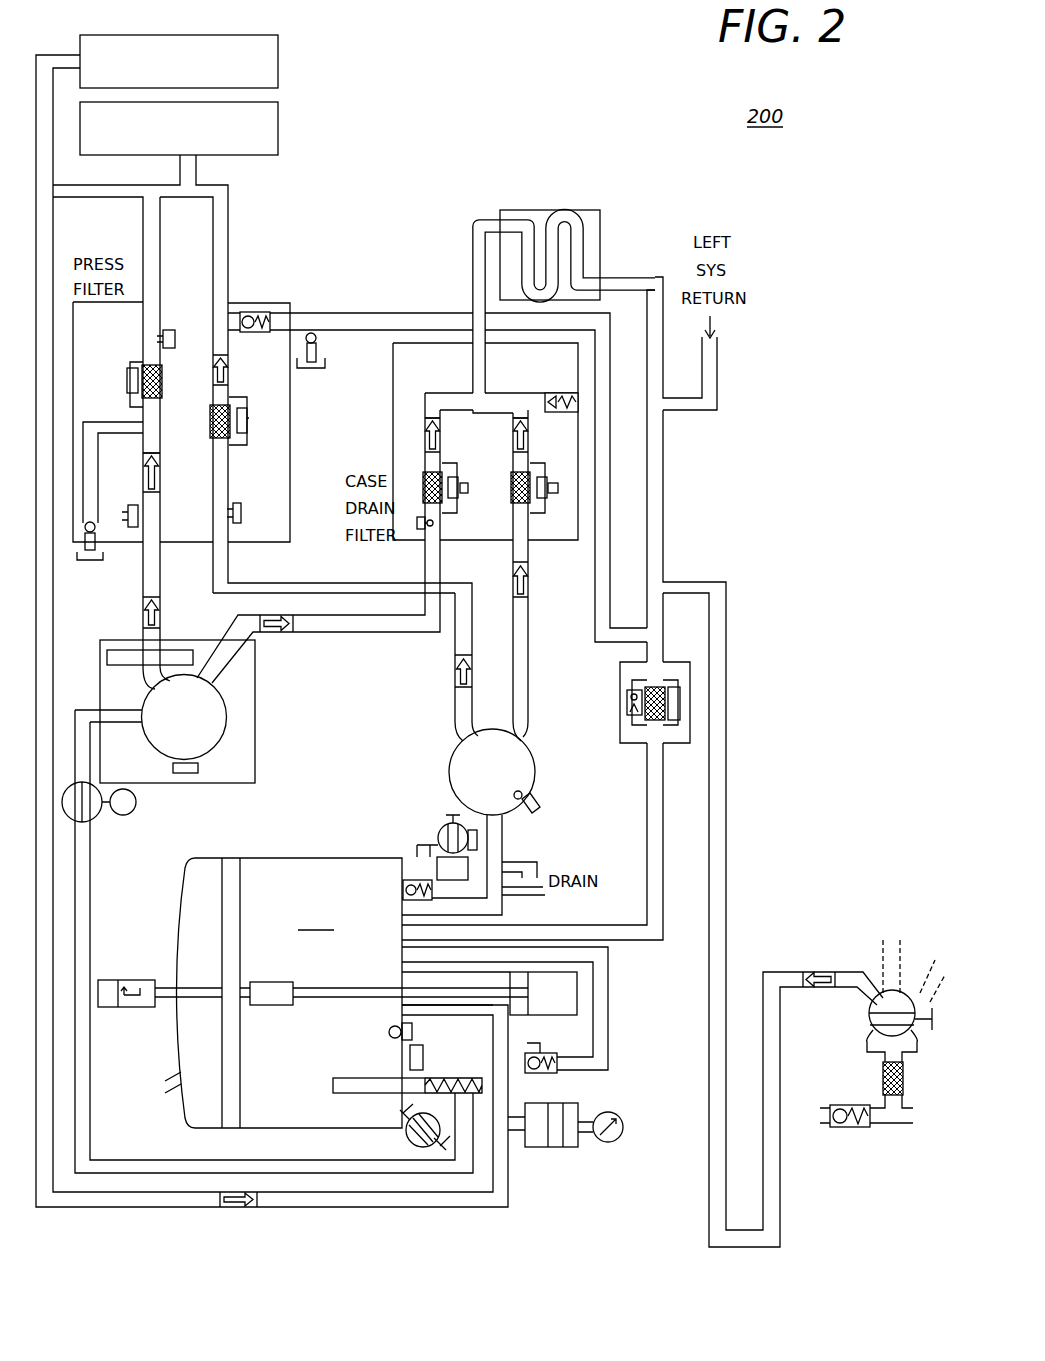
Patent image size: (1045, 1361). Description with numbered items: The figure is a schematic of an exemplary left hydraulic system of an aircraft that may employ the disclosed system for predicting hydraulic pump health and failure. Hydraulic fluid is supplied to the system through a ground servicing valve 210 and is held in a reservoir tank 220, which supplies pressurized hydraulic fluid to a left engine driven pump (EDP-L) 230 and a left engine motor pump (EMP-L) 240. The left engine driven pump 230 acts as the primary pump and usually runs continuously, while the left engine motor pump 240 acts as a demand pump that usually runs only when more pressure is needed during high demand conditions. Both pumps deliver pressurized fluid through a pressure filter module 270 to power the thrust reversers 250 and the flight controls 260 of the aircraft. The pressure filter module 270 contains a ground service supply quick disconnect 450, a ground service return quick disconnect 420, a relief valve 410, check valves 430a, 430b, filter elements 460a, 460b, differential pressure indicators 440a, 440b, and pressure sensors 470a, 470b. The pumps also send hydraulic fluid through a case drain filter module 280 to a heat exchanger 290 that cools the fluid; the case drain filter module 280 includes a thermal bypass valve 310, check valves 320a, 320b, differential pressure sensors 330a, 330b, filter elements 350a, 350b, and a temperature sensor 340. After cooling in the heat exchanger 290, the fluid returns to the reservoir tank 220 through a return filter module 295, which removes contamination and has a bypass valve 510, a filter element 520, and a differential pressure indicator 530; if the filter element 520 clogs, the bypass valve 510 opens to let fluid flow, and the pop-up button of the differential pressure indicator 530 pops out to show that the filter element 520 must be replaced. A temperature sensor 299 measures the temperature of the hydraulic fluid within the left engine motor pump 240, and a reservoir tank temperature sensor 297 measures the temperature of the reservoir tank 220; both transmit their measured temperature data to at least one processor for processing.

The ground servicing valve 210 is at (865, 960).
The reservoir tank 220 is at (337, 1004).
The left engine driven pump (EDP-L) 230 is at (236, 716).
The left engine motor pump (EMP-L) 240 is at (546, 770).
The thrust reversers 250 is at (280, 56).
The flight controls 260 is at (280, 126).
The pressure filter module 270 is at (181, 293).
The case drain filter module 280 is at (410, 335).
The heat exchanger 290 is at (576, 200).
The return filter module 295 is at (683, 650).
The reservoir tank temperature sensor 297 is at (412, 1031).
The temperature sensor 299 is at (536, 812).
The thermal bypass valve 310 is at (553, 386).
The check valve 320a is at (428, 430).
The check valve 320b is at (533, 432).
The differential pressure sensor 330a is at (463, 477).
The differential pressure sensor 330b is at (559, 488).
The temperature sensor 340 is at (417, 525).
The filter element 350a is at (424, 482).
The filter element 350b is at (527, 497).
The relief valve 410 is at (258, 311).
The ground service return quick disconnect (QD) 420 is at (320, 350).
The check valve 430a is at (162, 475).
The check valve 430b is at (234, 372).
The differential pressure indicator 440a is at (127, 381).
The differential pressure indicator 440b is at (248, 420).
The ground service supply quick disconnect (QD) 450 is at (88, 560).
The filter element 460a is at (142, 376).
The filter element 460b is at (214, 418).
The pressure sensor 470a is at (127, 516).
The pressure sensor 470b is at (241, 520).
The bypass valve 510 is at (627, 703).
The filter element 520 is at (646, 694).
The differential pressure indicator 530 is at (681, 703).